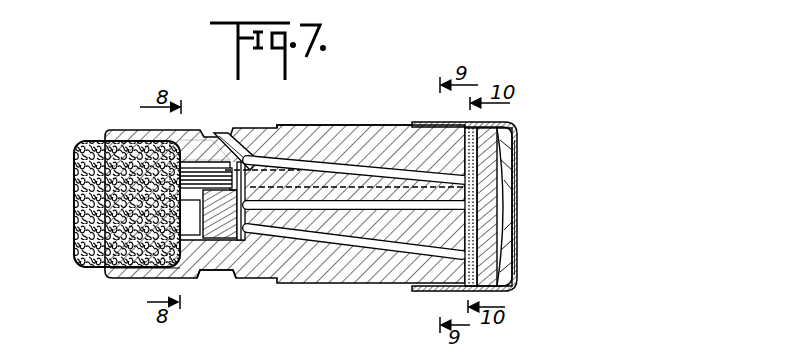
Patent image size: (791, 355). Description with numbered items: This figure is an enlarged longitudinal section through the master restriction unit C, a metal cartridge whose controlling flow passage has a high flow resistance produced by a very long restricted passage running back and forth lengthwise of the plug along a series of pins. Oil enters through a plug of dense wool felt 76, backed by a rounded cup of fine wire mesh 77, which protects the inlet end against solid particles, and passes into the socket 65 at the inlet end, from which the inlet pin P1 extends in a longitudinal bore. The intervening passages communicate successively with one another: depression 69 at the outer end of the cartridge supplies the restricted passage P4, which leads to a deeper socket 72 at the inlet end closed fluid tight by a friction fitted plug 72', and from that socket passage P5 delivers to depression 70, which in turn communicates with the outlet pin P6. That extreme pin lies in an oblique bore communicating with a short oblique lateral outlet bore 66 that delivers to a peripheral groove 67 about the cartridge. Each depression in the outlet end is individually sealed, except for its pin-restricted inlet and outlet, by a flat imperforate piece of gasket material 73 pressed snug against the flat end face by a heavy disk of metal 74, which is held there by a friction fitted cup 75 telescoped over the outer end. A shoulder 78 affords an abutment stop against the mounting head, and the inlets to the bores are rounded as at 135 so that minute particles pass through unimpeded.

The master restriction unit C is at (341, 283).
The socket 65 is at (191, 130).
The oblique lateral outlet bore 66 is at (244, 134).
The peripheral groove 67 is at (212, 277).
The depression 69 is at (490, 270).
The depression 70 is at (504, 191).
The socket 72 is at (269, 241).
The friction fitted plug 72' is at (220, 255).
The gasket material 73 is at (473, 233).
The disk of metal 74 is at (498, 147).
The friction fitted cup 75 is at (514, 259).
The plug of dense wool felt 76 is at (82, 232).
The rounded cup of fine wire mesh 77 is at (148, 268).
The shoulder 78 is at (278, 128).
The rounded inlet 135 is at (283, 241).
The inlet pin P1 is at (366, 165).
The restriction pin P4 is at (410, 253).
The restriction pin P5 is at (385, 209).
The outlet pin P6 is at (320, 177).